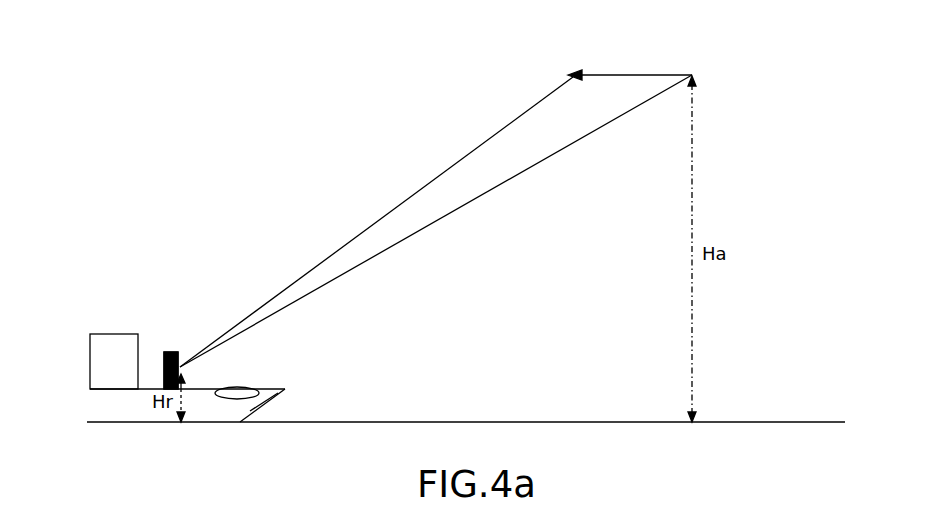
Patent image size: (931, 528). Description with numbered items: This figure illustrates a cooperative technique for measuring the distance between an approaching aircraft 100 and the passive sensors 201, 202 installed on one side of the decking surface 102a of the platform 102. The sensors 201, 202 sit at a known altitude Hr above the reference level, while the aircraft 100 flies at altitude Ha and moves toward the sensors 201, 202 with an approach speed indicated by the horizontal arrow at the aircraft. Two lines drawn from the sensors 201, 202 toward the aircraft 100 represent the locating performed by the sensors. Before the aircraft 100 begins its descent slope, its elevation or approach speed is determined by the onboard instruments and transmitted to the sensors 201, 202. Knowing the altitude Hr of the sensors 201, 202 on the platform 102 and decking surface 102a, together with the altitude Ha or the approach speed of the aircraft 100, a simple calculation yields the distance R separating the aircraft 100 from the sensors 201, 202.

The aircraft 100 is at (693, 76).
The passive sensor 201 is at (184, 363).
The passive sensor 202 is at (189, 336).
The platform 102 is at (278, 408).
The decking surface 102a is at (207, 388).